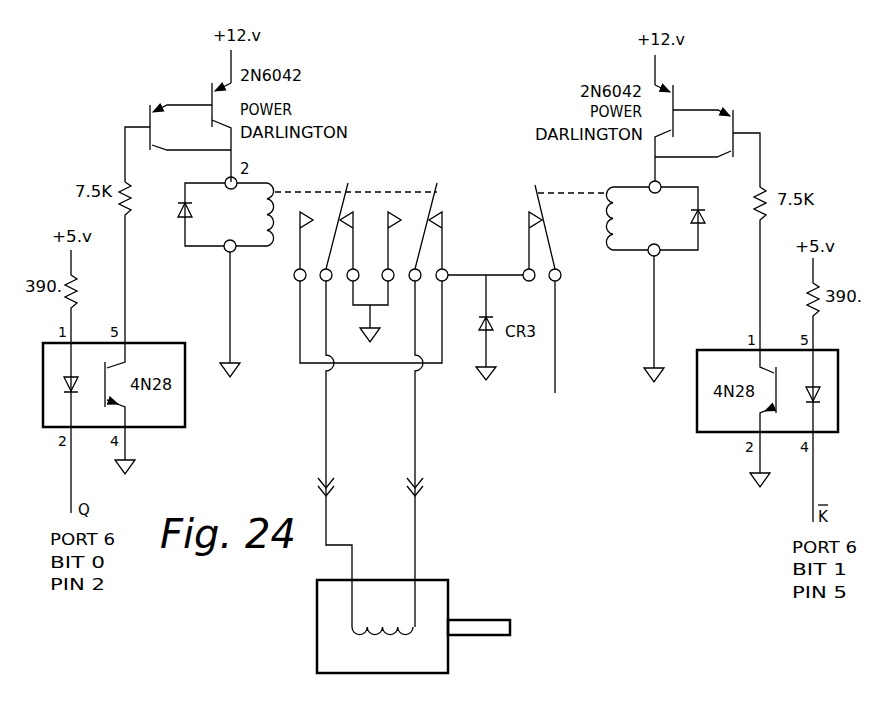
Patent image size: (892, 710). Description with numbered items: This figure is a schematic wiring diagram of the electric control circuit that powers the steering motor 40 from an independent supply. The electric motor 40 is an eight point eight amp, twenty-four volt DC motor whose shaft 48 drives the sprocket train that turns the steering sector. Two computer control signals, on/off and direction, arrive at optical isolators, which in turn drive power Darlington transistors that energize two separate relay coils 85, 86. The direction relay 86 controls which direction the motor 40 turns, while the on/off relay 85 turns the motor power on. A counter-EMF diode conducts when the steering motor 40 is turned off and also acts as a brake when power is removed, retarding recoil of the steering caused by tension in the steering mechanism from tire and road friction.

The direction relay 86 is at (380, 125).
The on/off relay 85 is at (515, 157).
The electric motor 40 is at (442, 580).
The shaft 48 is at (476, 620).